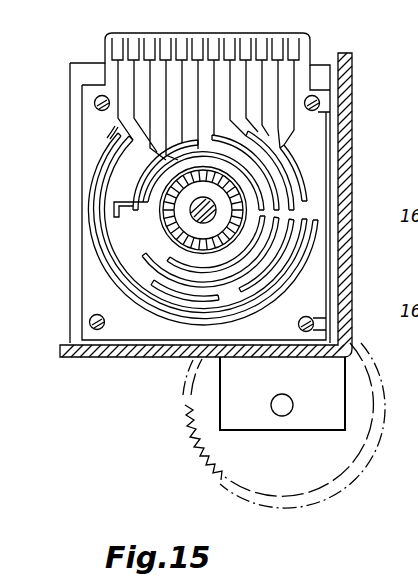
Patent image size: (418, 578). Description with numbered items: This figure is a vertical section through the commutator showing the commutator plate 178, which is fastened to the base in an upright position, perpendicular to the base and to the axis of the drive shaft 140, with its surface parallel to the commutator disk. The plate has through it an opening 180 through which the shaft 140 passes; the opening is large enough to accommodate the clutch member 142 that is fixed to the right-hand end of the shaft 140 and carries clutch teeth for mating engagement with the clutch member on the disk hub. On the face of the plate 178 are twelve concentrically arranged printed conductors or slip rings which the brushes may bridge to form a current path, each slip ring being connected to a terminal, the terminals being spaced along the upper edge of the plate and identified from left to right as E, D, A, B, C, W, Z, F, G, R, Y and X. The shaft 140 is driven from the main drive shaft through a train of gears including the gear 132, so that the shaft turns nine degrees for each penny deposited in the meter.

The commutator plate 178 is at (88, 132).
The clutch member 142 is at (203, 225).
The opening 180 is at (170, 236).
The drive shaft 140 is at (190, 212).
The gear 132 is at (193, 443).